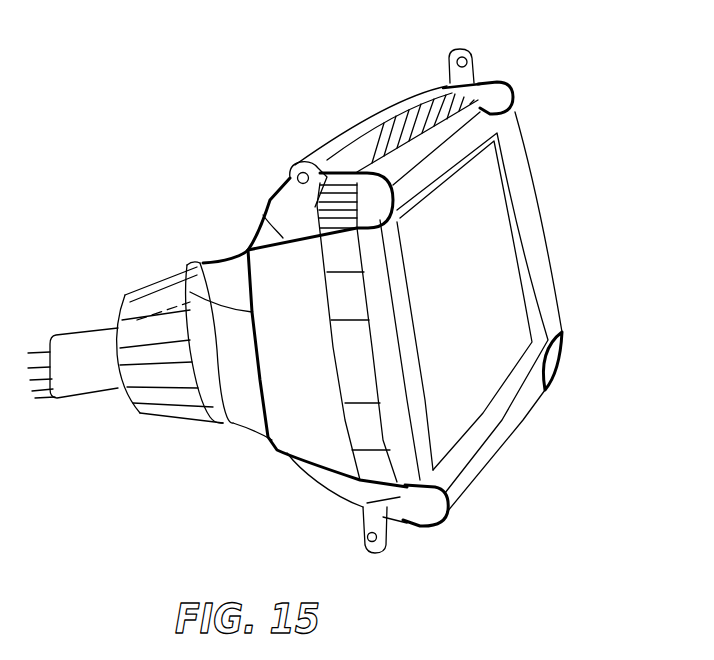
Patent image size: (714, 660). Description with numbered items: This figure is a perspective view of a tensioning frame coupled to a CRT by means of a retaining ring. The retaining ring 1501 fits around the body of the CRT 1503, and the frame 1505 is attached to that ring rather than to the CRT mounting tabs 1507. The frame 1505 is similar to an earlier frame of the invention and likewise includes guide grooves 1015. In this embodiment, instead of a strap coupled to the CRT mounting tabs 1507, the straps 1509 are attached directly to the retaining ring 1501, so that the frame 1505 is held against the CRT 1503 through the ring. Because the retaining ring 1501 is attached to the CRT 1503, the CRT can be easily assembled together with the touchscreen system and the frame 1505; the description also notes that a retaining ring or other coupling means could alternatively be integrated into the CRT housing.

The retaining ring 1501 is at (197, 292).
The CRT 1503 is at (187, 450).
The frame 1505 is at (527, 222).
The CRT mounting tabs 1507 is at (475, 57).
The straps 1509 is at (265, 220).
The guide grooves 1015 is at (410, 185).